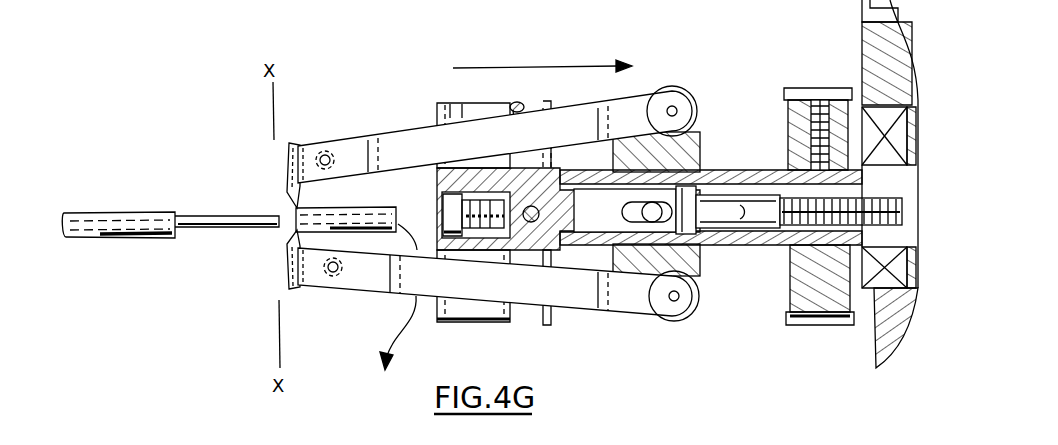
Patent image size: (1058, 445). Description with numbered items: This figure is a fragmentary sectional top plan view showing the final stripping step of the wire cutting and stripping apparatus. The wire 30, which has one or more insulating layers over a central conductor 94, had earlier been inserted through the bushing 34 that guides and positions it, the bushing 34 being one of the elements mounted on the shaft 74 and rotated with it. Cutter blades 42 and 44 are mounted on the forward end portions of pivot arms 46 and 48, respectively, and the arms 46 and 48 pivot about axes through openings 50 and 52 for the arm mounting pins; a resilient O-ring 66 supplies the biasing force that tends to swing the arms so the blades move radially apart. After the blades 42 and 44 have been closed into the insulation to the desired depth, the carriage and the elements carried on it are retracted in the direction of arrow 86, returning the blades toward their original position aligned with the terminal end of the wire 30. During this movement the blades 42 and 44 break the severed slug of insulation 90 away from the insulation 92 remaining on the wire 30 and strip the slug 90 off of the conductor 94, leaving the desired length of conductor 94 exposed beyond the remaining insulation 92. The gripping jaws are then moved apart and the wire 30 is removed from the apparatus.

The wire 30 is at (149, 243).
The bushing 34 is at (700, 258).
The cutter blade 42 is at (292, 186).
The cutter blade 44 is at (292, 254).
The pivot arm 46 is at (400, 140).
The pivot arm 48 is at (376, 284).
The opening 50 is at (476, 148).
The opening 52 is at (490, 278).
The resilient O-ring 66 is at (524, 104).
The shaft 74 is at (545, 182).
The arrow 86 is at (554, 68).
The severed slug of insulation 90 is at (379, 216).
The insulation 92 is at (157, 210).
The conductor 94 is at (203, 217).